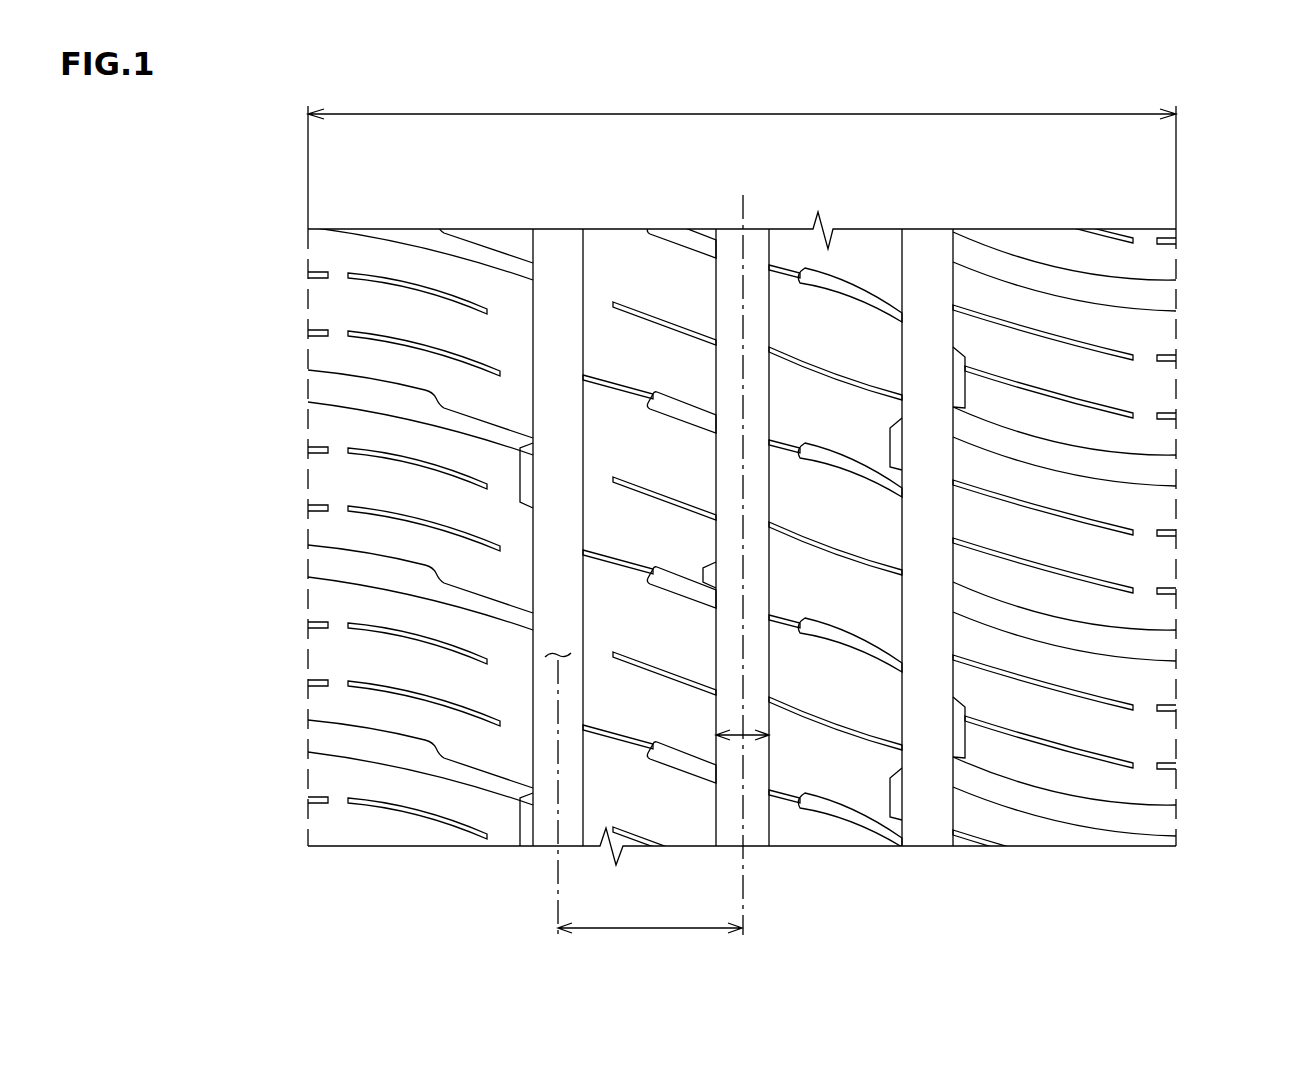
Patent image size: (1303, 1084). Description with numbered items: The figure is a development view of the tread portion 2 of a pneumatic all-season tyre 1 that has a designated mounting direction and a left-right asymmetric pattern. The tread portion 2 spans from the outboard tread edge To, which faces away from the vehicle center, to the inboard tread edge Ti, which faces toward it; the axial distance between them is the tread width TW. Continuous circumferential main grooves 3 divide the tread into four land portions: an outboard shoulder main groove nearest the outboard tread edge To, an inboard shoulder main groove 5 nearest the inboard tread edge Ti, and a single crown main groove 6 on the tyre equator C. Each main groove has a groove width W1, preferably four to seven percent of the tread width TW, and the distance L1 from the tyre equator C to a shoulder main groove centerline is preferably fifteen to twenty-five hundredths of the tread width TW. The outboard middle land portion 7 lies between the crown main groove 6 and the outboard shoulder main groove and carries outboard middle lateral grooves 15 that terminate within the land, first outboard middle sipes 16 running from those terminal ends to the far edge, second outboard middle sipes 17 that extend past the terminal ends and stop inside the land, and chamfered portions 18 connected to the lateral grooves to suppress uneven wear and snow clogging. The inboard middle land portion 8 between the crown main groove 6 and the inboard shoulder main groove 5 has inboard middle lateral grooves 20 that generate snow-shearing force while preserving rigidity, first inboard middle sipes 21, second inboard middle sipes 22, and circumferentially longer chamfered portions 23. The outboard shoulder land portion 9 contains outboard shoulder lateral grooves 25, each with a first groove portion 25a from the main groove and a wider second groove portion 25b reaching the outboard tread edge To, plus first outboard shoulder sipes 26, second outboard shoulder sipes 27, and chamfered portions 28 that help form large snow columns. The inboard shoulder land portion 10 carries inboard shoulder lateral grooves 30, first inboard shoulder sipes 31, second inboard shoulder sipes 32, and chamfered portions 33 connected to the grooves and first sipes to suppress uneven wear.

The tyre 1 is at (986, 216).
The tread portion 2 is at (664, 218).
The main grooves 3 is at (557, 502).
The inboard shoulder main groove 5 is at (925, 275).
The crown main groove 6 is at (729, 282).
The outboard middle land portion 7 is at (458, 536).
The inboard middle land portion 8 is at (1022, 536).
The outboard shoulder land portion 9 is at (366, 561).
The inboard shoulder land portion 10 is at (1114, 536).
The outboard middle lateral grooves 15 is at (687, 412).
The first outboard middle sipes 16 is at (623, 387).
The second outboard middle sipes 17 is at (657, 497).
The chamfered portions 18 is at (708, 584).
The inboard middle lateral grooves 20 is at (859, 469).
The first inboard middle sipes 21 is at (802, 444).
The second inboard middle sipes 22 is at (829, 547).
The chamfered portions 23 is at (895, 800).
The outboard shoulder lateral grooves 25 is at (420, 580).
The first groove portion 25a is at (478, 777).
The second groove portion 25b is at (372, 742).
The first outboard shoulder sipes 26 is at (425, 697).
The second outboard shoulder sipes 27 is at (322, 684).
The chamfered portions 28 is at (528, 478).
The inboard shoulder lateral grooves 30 is at (1042, 625).
The first inboard shoulder sipes 31 is at (1052, 690).
The second inboard shoulder sipes 32 is at (1168, 704).
The chamfered portions 33 is at (958, 735).
The tread width TW is at (742, 155).
The distance L1 is at (643, 808).
The groove width W1 is at (746, 740).
The tyre equator C is at (742, 553).
The outboard tread edge To is at (306, 243).
The inboard tread edge Ti is at (1178, 243).